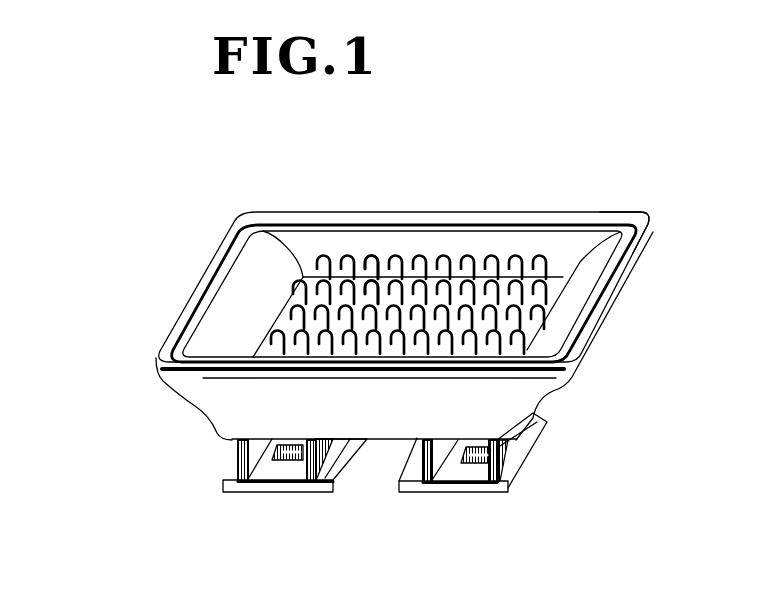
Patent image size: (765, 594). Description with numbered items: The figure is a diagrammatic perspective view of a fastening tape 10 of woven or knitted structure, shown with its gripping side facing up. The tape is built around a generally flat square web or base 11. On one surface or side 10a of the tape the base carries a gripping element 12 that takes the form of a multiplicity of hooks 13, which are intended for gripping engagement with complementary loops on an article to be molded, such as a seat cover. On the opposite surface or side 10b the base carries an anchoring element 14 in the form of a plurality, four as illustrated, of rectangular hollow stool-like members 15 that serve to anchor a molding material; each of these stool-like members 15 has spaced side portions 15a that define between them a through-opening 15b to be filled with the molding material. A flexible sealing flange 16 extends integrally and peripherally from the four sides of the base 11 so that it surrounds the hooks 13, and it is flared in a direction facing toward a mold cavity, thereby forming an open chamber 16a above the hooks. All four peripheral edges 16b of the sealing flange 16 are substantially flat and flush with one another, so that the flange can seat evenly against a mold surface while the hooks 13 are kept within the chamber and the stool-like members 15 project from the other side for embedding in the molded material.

The fastening tape 10 is at (460, 166).
The surface or side 10a is at (305, 278).
The opposite surface or side 10b is at (232, 438).
The web or base 11 is at (378, 430).
The gripping element 12 is at (350, 258).
The hooks 13 is at (382, 258).
The anchoring element 14 is at (238, 490).
The stool-like members 15 is at (374, 482).
The side portions 15a is at (237, 455).
The through-opening 15b is at (283, 476).
The sealing flange 16 is at (218, 313).
The open chamber 16a is at (580, 238).
The peripheral edges 16b is at (513, 220).